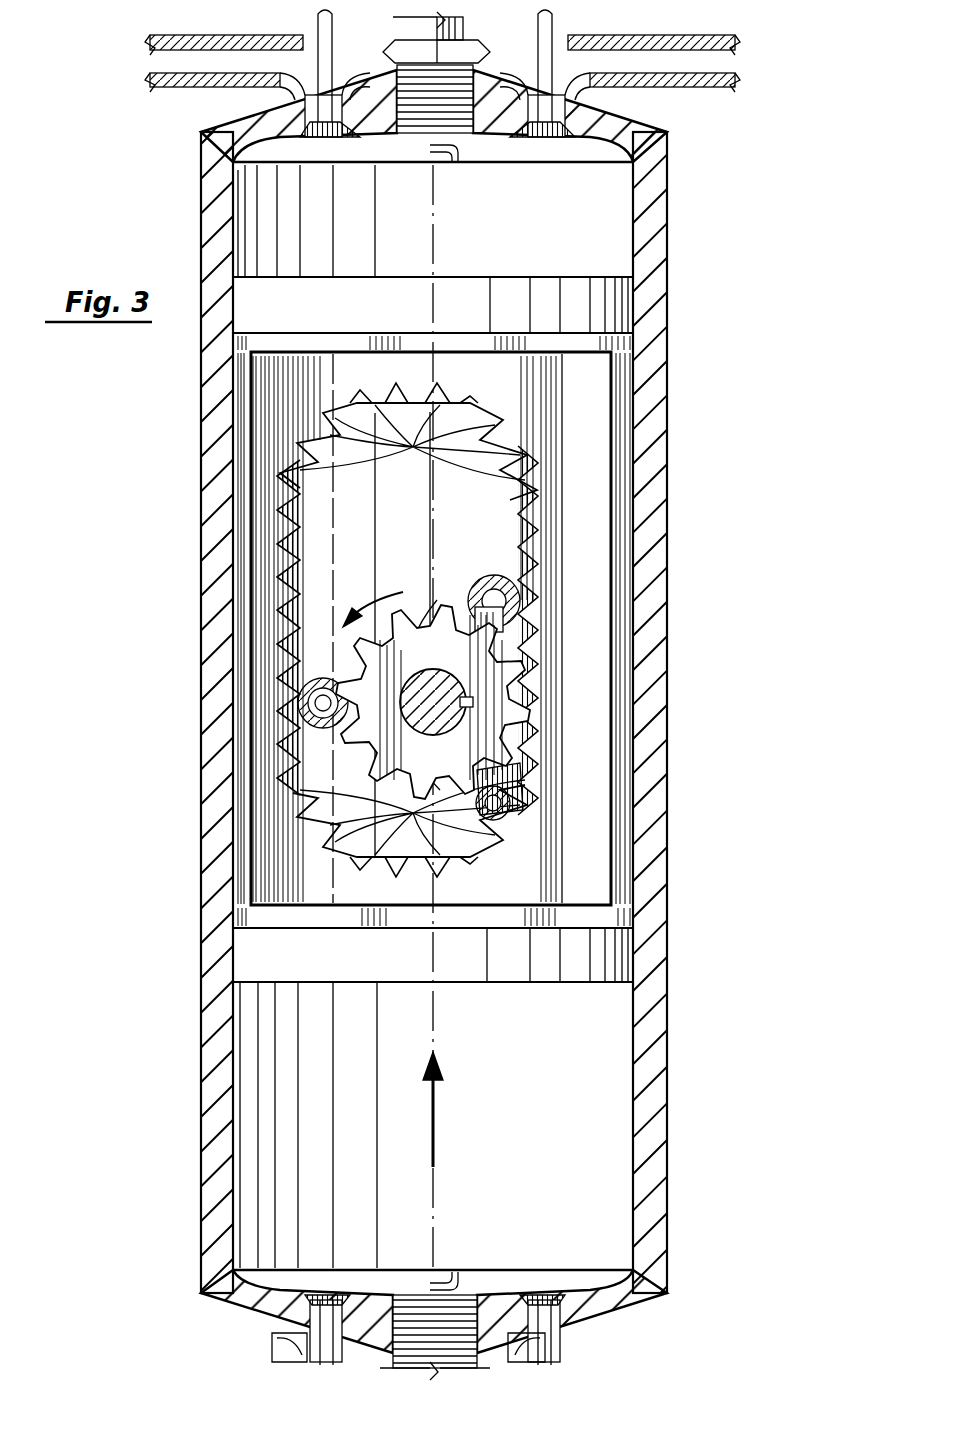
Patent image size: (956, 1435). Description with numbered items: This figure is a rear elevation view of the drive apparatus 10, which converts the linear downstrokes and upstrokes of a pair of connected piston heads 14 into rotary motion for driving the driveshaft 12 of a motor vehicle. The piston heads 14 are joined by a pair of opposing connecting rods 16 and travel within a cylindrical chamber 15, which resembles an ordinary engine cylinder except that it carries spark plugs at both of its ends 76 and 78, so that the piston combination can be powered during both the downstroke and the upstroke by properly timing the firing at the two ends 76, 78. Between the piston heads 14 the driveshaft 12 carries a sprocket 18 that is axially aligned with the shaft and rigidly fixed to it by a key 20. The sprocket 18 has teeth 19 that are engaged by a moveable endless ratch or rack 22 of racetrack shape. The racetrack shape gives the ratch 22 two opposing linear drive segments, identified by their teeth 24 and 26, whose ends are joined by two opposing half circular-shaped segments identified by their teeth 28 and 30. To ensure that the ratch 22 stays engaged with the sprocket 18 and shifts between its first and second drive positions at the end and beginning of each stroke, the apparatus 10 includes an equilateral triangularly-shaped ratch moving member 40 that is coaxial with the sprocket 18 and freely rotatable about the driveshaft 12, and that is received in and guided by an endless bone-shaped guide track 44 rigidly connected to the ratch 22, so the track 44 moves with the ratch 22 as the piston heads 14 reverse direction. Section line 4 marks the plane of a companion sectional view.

The drive apparatus 10 is at (726, 242).
The driveshaft 12 is at (433, 686).
The piston heads 14 is at (612, 300).
The cylindrical chamber 15 is at (652, 495).
The connecting rods 16 is at (625, 552).
The sprocket 18 is at (437, 600).
The teeth 19 is at (373, 598).
The key 20 is at (436, 750).
The ratch 22 is at (540, 435).
The teeth of first drive segment 24 is at (300, 549).
The teeth of second drive segment 26 is at (518, 533).
The teeth of half-circular segment 28 is at (473, 458).
The teeth of half-circular segment 30 is at (357, 800).
The ratch moving member 40 is at (530, 755).
The guide track 44 is at (296, 583).
The end of chamber 76 is at (493, 100).
The end of chamber 78 is at (493, 1327).
The section line 4- 4 is at (185, 703).